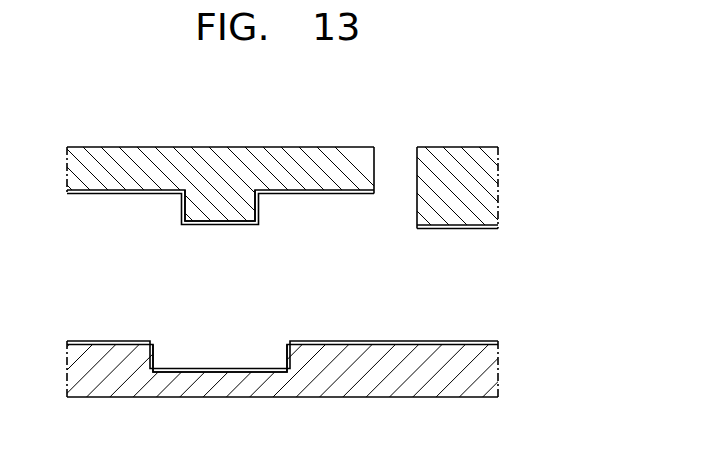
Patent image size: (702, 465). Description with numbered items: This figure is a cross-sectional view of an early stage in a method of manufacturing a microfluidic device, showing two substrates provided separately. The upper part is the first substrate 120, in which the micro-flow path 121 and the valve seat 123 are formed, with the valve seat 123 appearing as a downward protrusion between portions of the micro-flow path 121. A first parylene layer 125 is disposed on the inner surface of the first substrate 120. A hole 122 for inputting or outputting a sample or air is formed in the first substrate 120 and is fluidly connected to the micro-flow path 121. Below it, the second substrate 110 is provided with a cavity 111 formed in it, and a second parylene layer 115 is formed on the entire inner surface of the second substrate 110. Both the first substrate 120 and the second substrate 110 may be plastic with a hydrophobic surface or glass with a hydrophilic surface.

The second substrate 110 is at (493, 381).
The cavity 111 is at (217, 358).
The second parylene layer 115 is at (478, 340).
The first substrate 120 is at (495, 182).
The micro-flow path 121 is at (119, 207).
The hole 122 is at (396, 165).
The valve seat 123 is at (193, 209).
The first parylene layer 125 is at (477, 228).